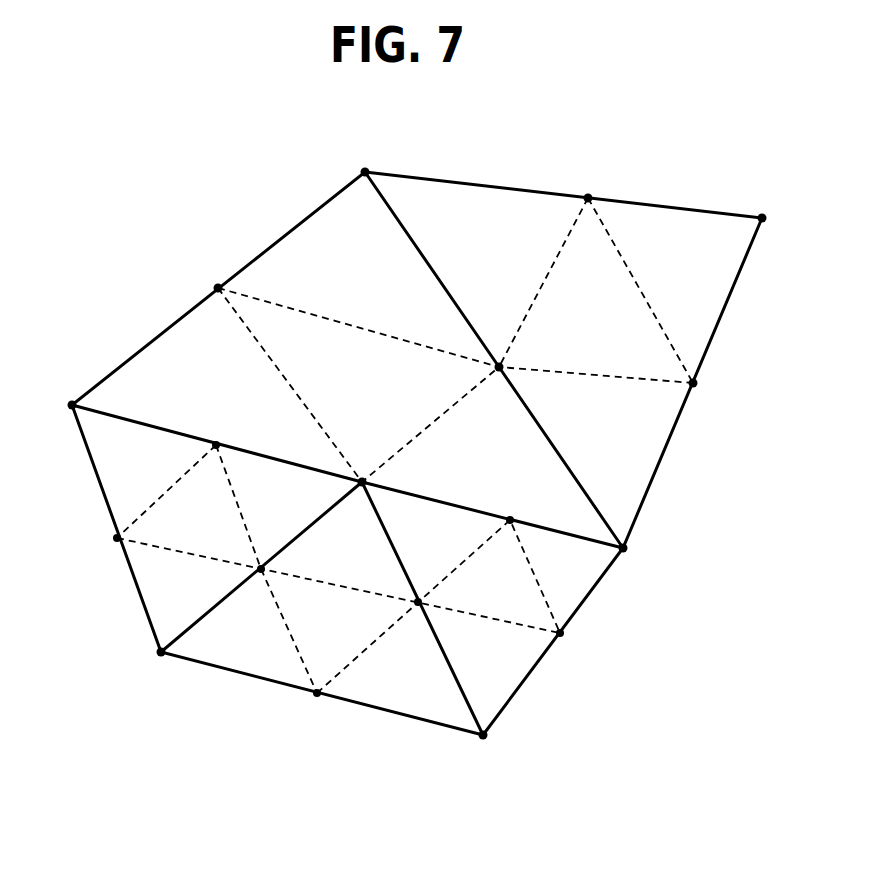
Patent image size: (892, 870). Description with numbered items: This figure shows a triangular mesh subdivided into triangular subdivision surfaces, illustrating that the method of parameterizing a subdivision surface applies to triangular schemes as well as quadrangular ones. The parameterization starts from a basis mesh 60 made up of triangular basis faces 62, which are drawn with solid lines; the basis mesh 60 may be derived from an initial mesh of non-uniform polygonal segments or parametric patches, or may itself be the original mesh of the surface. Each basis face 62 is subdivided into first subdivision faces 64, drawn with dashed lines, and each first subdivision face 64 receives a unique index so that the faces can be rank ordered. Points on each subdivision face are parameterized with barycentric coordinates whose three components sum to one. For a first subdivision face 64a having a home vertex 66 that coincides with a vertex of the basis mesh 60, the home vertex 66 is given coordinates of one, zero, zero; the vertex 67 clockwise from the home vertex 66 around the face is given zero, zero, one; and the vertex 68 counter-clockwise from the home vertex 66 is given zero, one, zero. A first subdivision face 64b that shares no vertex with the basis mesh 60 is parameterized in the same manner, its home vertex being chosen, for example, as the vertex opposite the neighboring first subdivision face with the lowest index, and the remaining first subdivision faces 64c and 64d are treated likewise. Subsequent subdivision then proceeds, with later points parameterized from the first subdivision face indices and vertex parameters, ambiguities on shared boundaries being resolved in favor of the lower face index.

The basis mesh 60 is at (126, 296).
The triangular basis face 62 is at (277, 326).
The first subdivision face 64 is at (362, 283).
The first subdivision face with home vertex common to basis mesh vertex 64a is at (694, 271).
The first subdivision face with no basis mesh vertex 64b is at (618, 331).
The first subdivision face 64c is at (628, 446).
The first subdivision face 64d is at (503, 257).
The home vertex 66 is at (427, 450).
The clockwise vertex 67 is at (697, 386).
The counter-clockwise vertex 68 is at (591, 196).